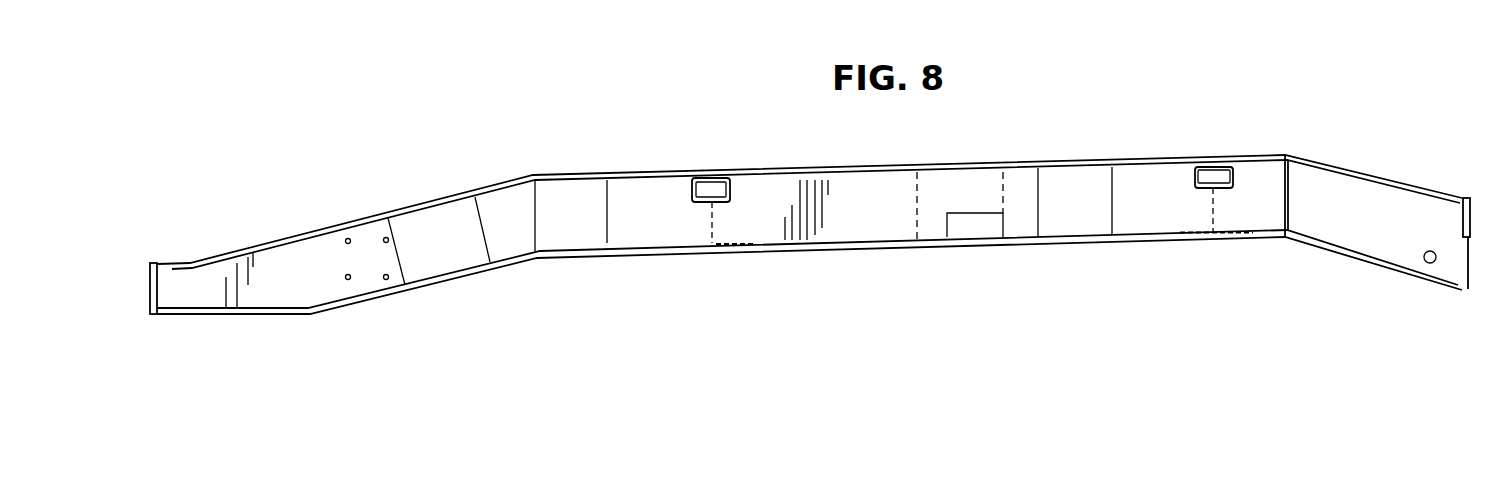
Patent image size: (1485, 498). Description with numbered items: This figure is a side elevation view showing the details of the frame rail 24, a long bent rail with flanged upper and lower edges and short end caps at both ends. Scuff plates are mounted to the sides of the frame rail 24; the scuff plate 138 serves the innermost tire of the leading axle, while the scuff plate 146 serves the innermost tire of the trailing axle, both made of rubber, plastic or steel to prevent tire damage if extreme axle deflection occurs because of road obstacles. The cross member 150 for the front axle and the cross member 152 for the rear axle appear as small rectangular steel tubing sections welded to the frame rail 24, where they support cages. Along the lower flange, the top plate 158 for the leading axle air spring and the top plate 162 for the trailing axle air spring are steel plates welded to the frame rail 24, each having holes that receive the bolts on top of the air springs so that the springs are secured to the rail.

The frame rail 24 is at (776, 170).
The scuff plate 138 is at (617, 192).
The scuff plate 146 is at (1112, 190).
The cross member 150 is at (692, 178).
The cross member 152 is at (1213, 167).
The top plate 158 is at (722, 245).
The top plate 162 is at (1192, 237).